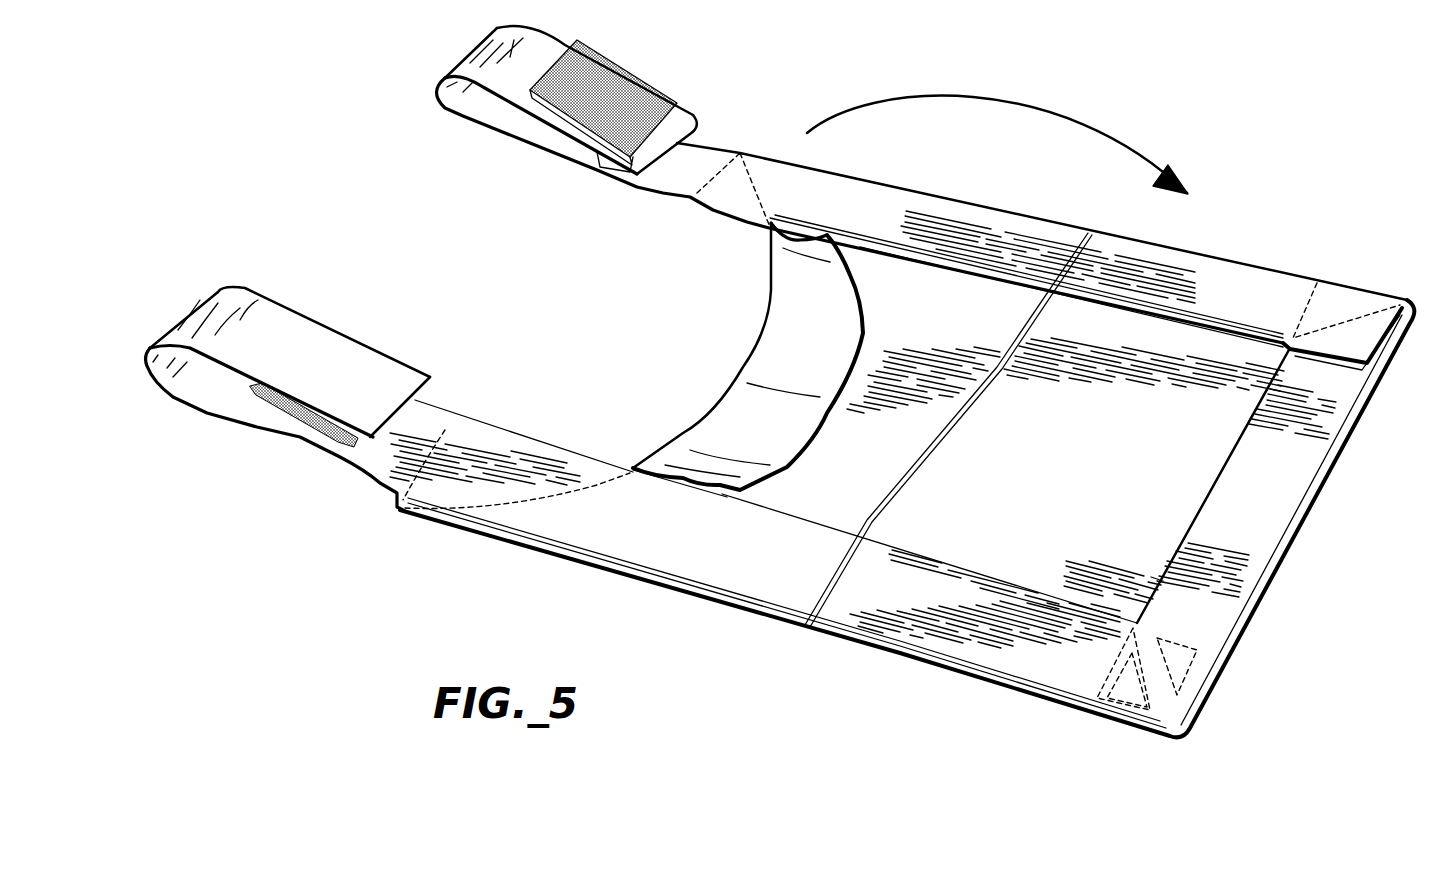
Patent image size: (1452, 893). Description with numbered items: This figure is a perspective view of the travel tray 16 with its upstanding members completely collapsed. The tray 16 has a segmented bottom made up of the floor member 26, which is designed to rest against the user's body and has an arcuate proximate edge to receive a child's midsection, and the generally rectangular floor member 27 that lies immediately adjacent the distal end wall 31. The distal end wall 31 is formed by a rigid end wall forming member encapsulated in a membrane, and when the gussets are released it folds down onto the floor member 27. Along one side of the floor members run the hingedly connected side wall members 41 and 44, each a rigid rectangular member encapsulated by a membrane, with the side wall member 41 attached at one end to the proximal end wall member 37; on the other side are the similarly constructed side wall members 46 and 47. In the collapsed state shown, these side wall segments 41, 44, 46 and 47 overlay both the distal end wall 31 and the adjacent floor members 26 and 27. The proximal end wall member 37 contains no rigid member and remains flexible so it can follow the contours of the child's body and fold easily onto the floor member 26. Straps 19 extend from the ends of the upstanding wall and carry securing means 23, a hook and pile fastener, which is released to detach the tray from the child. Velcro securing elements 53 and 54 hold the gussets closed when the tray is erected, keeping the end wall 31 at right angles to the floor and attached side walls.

The travel tray 16 is at (1232, 204).
The strap 19 is at (513, 78).
The securing means 23 is at (617, 80).
The floor member 26 is at (847, 477).
The floor member 27 is at (1075, 476).
The distal end wall 31 is at (1278, 495).
The proximal end wall member 37 is at (795, 326).
The side wall member 41 is at (692, 556).
The side wall member 44 is at (880, 594).
The side wall member 46 is at (887, 200).
The side wall member 47 is at (1247, 283).
The velcro securing element 53 is at (1133, 693).
The velcro securing element 54 is at (1350, 317).